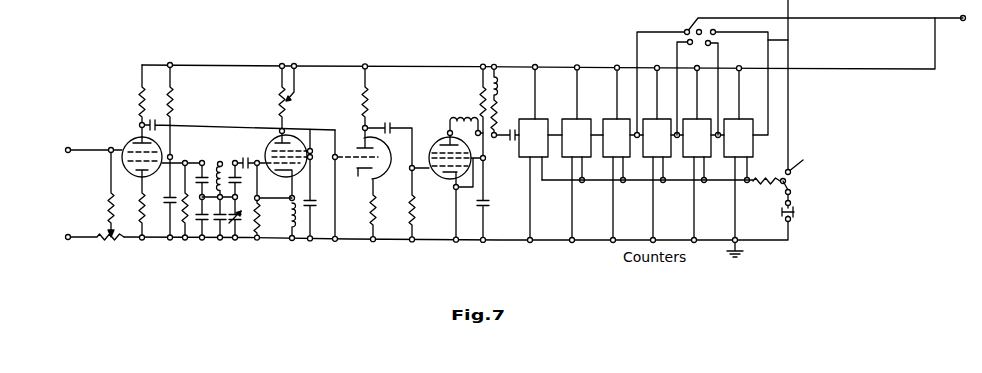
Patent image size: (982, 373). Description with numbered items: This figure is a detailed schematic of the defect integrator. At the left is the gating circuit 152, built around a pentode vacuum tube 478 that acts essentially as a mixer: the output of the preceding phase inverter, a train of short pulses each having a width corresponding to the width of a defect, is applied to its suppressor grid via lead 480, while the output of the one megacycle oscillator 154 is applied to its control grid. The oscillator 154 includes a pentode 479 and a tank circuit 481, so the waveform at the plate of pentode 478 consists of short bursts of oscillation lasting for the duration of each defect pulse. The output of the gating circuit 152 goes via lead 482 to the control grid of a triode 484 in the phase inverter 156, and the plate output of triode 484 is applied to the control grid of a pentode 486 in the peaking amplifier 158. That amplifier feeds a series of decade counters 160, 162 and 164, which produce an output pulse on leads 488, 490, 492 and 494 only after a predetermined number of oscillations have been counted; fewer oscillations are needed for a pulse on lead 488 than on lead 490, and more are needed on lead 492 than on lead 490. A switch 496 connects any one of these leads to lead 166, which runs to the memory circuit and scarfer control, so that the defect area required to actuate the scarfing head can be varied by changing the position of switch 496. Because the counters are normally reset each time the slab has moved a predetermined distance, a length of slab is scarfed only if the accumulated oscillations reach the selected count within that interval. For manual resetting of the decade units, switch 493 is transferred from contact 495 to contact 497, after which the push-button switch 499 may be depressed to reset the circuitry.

The gating circuit 152 is at (172, 57).
The one megacycle oscillator 154 is at (265, 57).
The phase inverter 156 is at (379, 57).
The peaking amplifier 158 is at (499, 57).
The decade counter 160 is at (538, 119).
The decade counter 162 is at (578, 119).
The third counter 164 is at (618, 119).
The lead 166 is at (822, 18).
The pentode vacuum tube 478 is at (132, 179).
The pentode 479 is at (272, 144).
The lead 480 is at (98, 148).
The tank circuit 481 is at (245, 233).
The lead 482 is at (308, 129).
The triode 484 is at (378, 127).
The pentode 486 is at (440, 181).
The lead 488 is at (630, 54).
The lead 490 is at (677, 50).
The lead 492 is at (719, 50).
The switch 493 is at (779, 186).
The lead 494 is at (790, 40).
The contact 495 is at (800, 162).
The switch 496 is at (696, 30).
The contact 497 is at (793, 193).
The push-button switch 499 is at (795, 212).